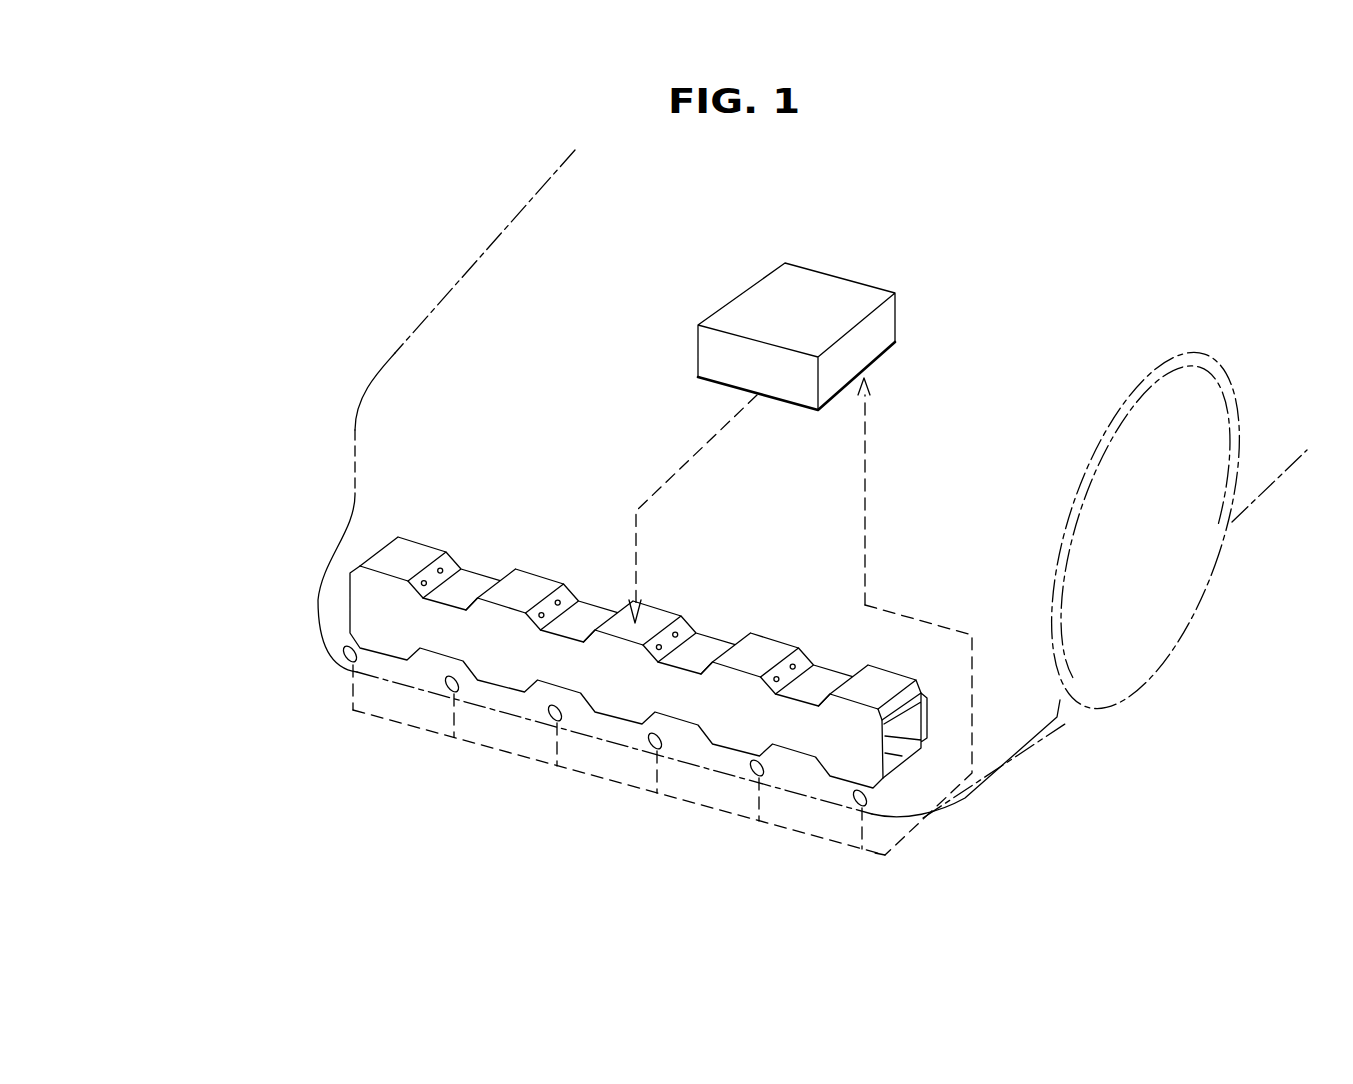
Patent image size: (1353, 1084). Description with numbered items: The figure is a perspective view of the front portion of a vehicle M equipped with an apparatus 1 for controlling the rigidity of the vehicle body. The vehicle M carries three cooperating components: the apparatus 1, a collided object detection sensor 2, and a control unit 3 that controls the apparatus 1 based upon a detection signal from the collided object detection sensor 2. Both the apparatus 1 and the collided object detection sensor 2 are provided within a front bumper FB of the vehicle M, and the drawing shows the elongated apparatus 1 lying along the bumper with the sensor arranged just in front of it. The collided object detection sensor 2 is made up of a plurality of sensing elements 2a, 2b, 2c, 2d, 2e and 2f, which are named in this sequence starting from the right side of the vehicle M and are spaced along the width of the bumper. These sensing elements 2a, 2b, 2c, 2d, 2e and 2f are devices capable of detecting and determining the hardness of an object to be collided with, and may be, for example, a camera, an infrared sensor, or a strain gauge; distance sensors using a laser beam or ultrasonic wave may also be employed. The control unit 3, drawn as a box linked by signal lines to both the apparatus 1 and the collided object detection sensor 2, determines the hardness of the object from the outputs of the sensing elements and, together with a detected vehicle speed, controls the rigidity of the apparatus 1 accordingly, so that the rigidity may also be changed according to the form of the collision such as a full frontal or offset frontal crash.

The vehicle M is at (438, 250).
The apparatus for controlling the rigidity of a vehicle body 1 is at (395, 558).
The front bumper FB is at (320, 620).
The control unit 3 is at (828, 293).
The collided object detection sensor 2 is at (847, 899).
The sensing element 2a is at (345, 668).
The sensing element 2b is at (448, 694).
The sensing element 2c is at (551, 724).
The sensing element 2d is at (651, 752).
The sensing element 2e is at (753, 780).
The sensing element 2f is at (856, 810).